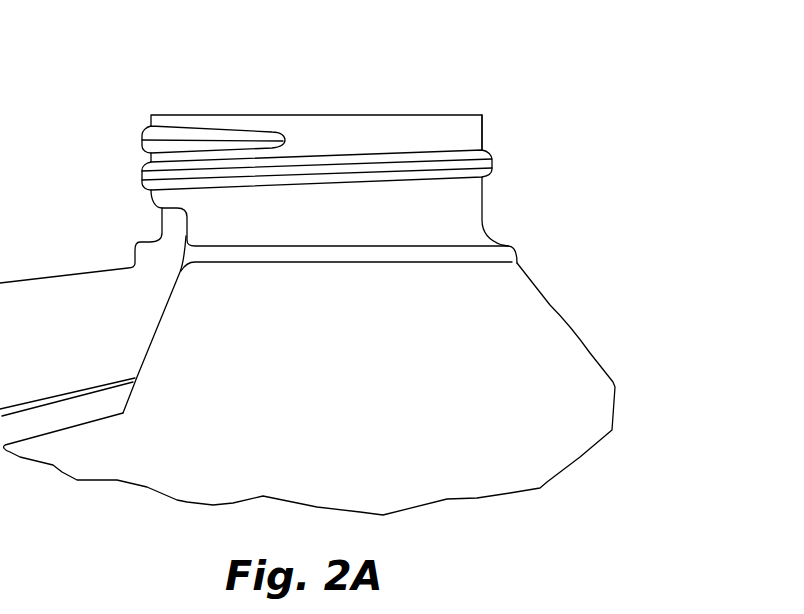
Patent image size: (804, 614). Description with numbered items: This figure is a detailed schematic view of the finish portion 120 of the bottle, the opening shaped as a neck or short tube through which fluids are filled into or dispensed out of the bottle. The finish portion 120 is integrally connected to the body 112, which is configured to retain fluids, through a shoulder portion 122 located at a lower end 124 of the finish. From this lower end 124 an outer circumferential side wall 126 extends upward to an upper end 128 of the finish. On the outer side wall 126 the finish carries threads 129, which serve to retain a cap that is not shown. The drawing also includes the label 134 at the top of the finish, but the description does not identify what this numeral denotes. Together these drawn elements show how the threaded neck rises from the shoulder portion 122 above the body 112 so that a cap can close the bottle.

The body 112 is at (555, 449).
The finish portion 120 is at (622, 115).
The shoulder portion 122 is at (503, 240).
The lower end 124 is at (498, 222).
The outer circumferential side wall 126 is at (483, 186).
The upper end 128 is at (455, 108).
The threads 129 is at (140, 141).
The neck finish 134 is at (292, 97).